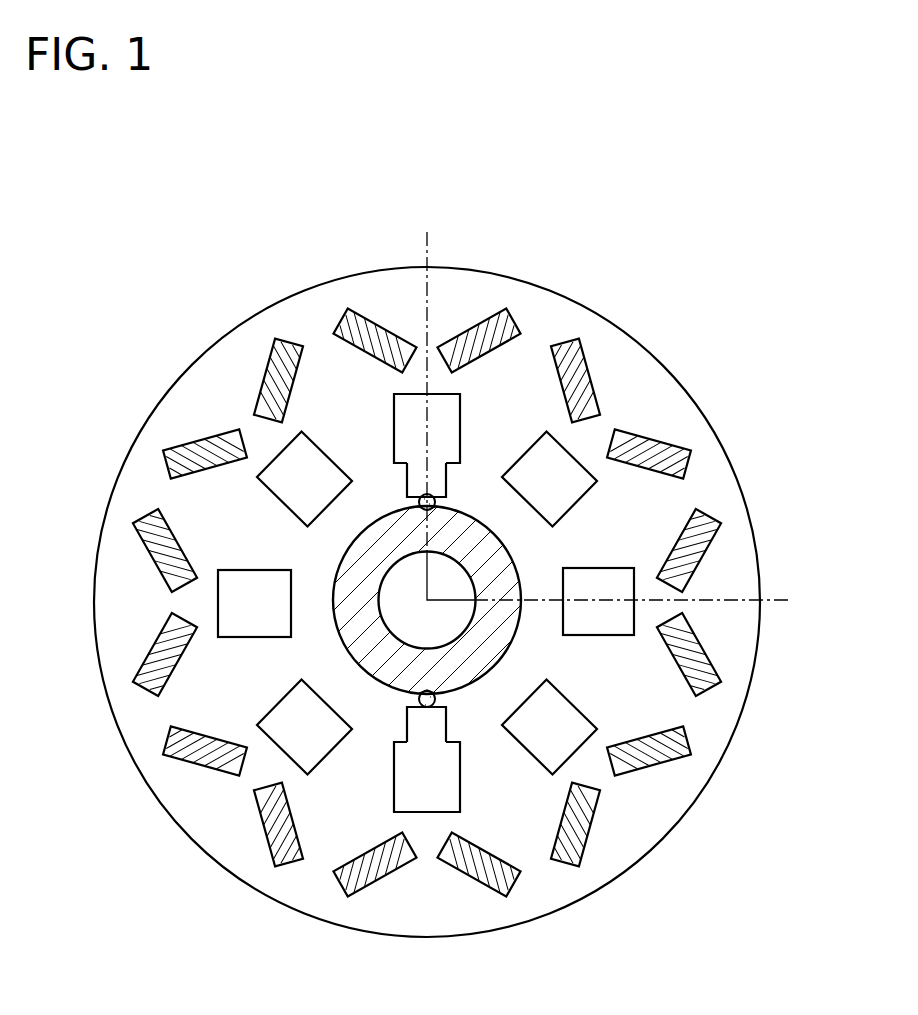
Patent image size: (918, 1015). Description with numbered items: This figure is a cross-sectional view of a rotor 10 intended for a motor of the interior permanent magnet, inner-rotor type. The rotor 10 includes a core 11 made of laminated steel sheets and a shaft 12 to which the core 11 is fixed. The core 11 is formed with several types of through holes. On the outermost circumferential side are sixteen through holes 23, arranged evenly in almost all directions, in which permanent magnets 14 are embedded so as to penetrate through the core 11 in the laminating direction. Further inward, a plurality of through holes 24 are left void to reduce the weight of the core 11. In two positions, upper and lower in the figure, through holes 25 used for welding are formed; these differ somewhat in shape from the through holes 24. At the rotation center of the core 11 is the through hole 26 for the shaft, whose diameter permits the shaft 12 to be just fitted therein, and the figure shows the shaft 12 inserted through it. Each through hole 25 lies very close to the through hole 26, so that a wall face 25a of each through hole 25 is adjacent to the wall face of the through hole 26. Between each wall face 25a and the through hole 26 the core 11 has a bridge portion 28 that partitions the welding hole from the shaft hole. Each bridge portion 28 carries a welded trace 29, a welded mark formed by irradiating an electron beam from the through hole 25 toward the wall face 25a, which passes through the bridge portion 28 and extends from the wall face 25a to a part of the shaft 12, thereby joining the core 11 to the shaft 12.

The rotor 10 is at (606, 228).
The core 11 is at (626, 357).
The shaft 12 is at (495, 582).
The permanent magnet 14 is at (705, 528).
The through hole 23 is at (688, 535).
The through hole 24 is at (618, 628).
The through hole for welding 25 is at (460, 410).
The wall face 25a is at (414, 498).
The through hole for shaft 26 is at (335, 640).
The bridge portion 28 is at (437, 504).
The welded trace 29 is at (418, 503).